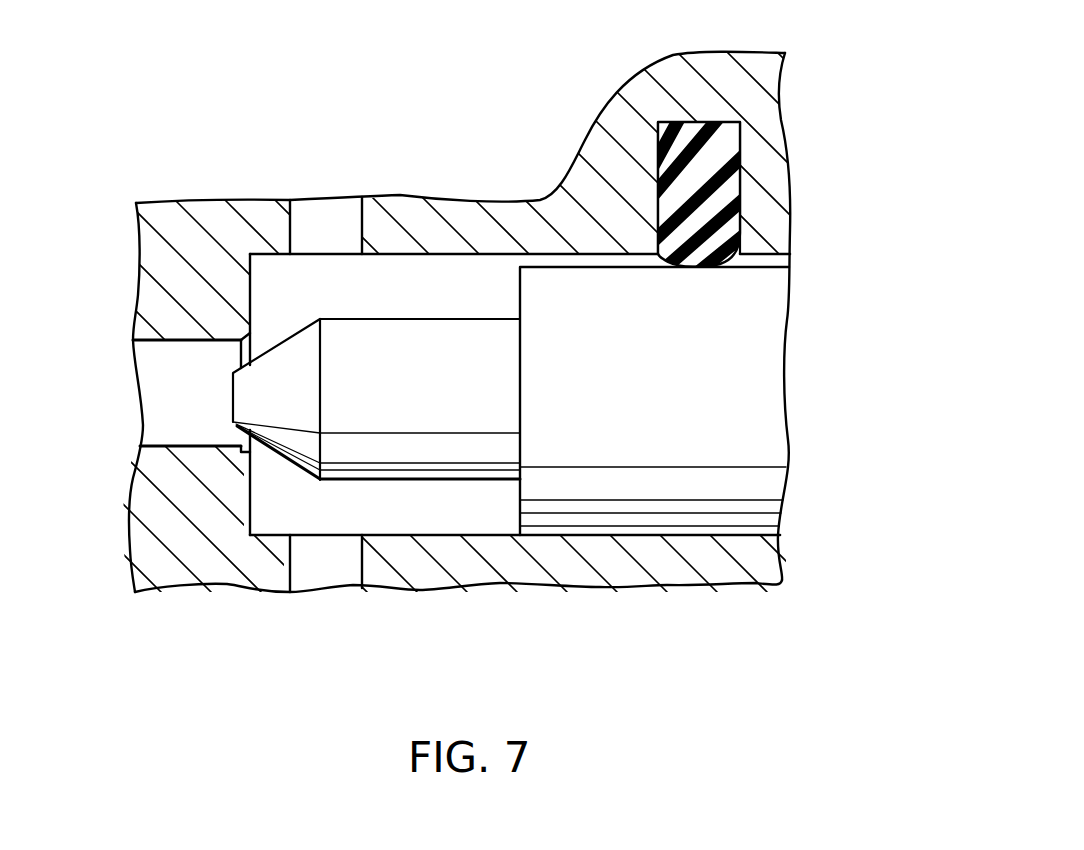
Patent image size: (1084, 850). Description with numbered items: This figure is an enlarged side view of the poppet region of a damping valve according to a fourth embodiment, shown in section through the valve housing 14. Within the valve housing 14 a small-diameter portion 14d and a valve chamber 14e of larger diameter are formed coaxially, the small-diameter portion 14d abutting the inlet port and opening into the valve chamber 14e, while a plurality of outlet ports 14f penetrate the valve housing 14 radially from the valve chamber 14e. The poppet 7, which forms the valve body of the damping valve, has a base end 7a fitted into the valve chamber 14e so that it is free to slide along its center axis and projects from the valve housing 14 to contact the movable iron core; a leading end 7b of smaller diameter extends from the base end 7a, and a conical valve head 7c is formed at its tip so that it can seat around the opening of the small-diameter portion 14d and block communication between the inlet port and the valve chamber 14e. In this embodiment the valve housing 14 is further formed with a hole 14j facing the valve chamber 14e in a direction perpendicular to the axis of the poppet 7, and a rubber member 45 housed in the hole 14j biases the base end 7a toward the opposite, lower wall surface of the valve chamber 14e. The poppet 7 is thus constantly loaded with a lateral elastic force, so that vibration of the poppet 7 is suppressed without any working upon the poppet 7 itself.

The valve housing 14 is at (162, 199).
The small-diameter portion 14d is at (157, 392).
The valve chamber 14e is at (405, 515).
The outlet port 14f is at (323, 225).
The hole 14j is at (660, 187).
The rubber member 45 is at (681, 135).
The poppet 7 is at (445, 313).
The base end 7a is at (535, 262).
The leading end 7b is at (492, 482).
The valve head 7c is at (300, 472).